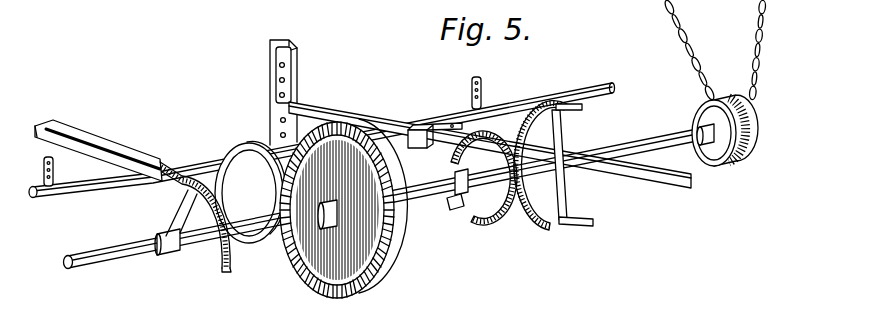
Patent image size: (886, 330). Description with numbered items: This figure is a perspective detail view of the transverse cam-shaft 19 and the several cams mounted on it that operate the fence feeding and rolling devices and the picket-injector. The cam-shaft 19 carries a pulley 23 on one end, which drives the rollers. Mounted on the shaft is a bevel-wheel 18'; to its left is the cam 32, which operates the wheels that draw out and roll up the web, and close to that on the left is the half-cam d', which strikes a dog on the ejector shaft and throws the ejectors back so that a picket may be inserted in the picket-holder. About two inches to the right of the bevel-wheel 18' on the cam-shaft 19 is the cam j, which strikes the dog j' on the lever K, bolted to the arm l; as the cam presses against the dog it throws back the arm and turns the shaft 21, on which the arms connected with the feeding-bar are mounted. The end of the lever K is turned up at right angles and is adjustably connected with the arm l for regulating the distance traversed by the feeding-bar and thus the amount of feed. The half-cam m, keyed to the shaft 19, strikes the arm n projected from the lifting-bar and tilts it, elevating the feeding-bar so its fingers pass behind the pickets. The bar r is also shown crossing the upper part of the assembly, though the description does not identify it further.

The arm l is at (268, 66).
The flat lever bar r is at (98, 150).
The arm n is at (262, 128).
The shaft 21 is at (322, 143).
The cam-shaft 19 is at (386, 198).
The cam 32 is at (250, 192).
The half-cam d' is at (201, 221).
The bevel-wheel 18' is at (343, 208).
The lever K is at (490, 137).
The dog j' is at (435, 144).
The cam j is at (482, 191).
The half-cam m is at (553, 176).
The pulley 23 is at (714, 83).